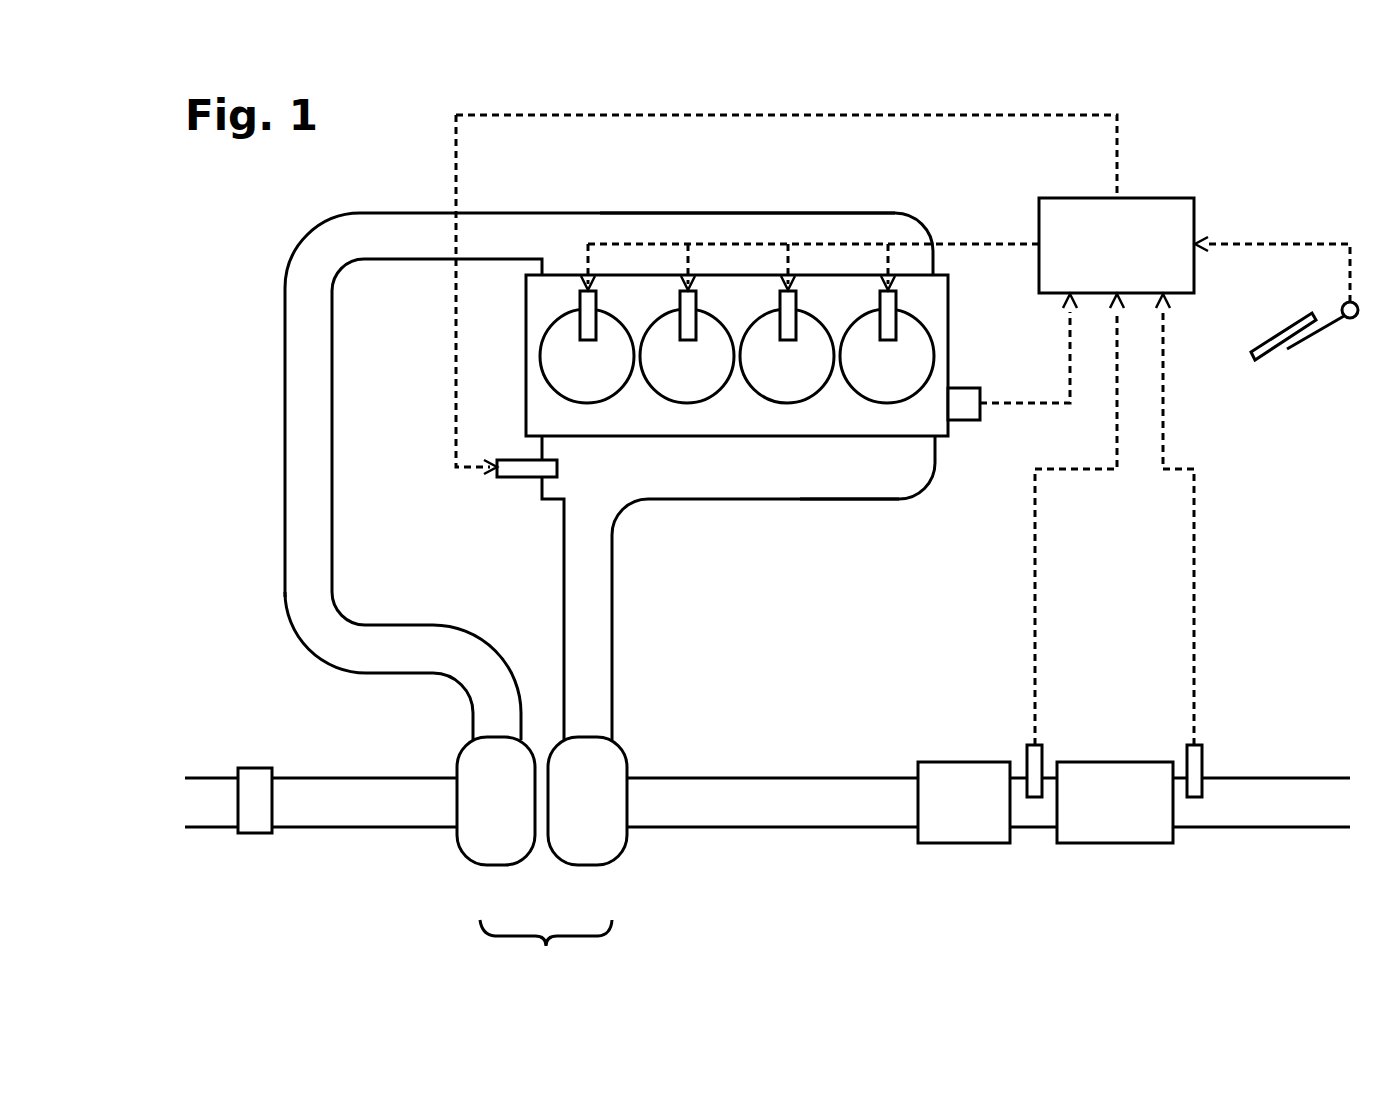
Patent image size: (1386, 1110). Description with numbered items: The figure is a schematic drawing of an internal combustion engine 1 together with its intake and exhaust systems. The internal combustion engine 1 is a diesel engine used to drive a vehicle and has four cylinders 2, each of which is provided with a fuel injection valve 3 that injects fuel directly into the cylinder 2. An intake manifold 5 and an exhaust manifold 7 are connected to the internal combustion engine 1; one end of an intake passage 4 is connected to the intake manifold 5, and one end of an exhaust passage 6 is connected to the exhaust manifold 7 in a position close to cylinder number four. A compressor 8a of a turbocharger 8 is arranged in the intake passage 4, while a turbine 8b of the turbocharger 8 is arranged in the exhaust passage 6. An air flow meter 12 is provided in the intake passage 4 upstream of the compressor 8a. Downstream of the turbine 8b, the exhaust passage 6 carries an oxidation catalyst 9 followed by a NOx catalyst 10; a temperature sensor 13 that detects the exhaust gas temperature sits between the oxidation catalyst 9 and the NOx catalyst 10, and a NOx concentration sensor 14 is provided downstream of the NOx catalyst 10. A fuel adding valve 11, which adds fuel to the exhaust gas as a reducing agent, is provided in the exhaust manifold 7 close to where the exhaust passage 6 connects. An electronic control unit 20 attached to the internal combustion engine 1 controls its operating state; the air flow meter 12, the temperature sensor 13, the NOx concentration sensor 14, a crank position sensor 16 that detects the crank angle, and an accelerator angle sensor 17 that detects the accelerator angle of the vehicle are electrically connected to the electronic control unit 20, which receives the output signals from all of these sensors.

The internal combustion engine 1 is at (526, 355).
The cylinder 2 is at (584, 400).
The fuel injection valve 3 is at (597, 303).
The intake passage 4 is at (285, 435).
The intake manifold 5 is at (730, 212).
The exhaust passage 6 is at (613, 627).
The exhaust manifold 7 is at (763, 499).
The turbocharger 8 is at (546, 948).
The compressor 8a is at (495, 866).
The turbine 8b is at (585, 866).
The oxidation catalyst 9 is at (960, 844).
The NOx catalyst 10 is at (1117, 844).
The fuel adding valve 11 is at (520, 478).
The air flow meter 12 is at (254, 834).
The temperature sensor 13 is at (1042, 765).
The NOx concentration sensor 14 is at (1202, 765).
The crank position sensor 16 is at (963, 388).
The accelerator angle sensor 17 is at (1354, 318).
The electronic control unit (ECU) 20 is at (1160, 198).